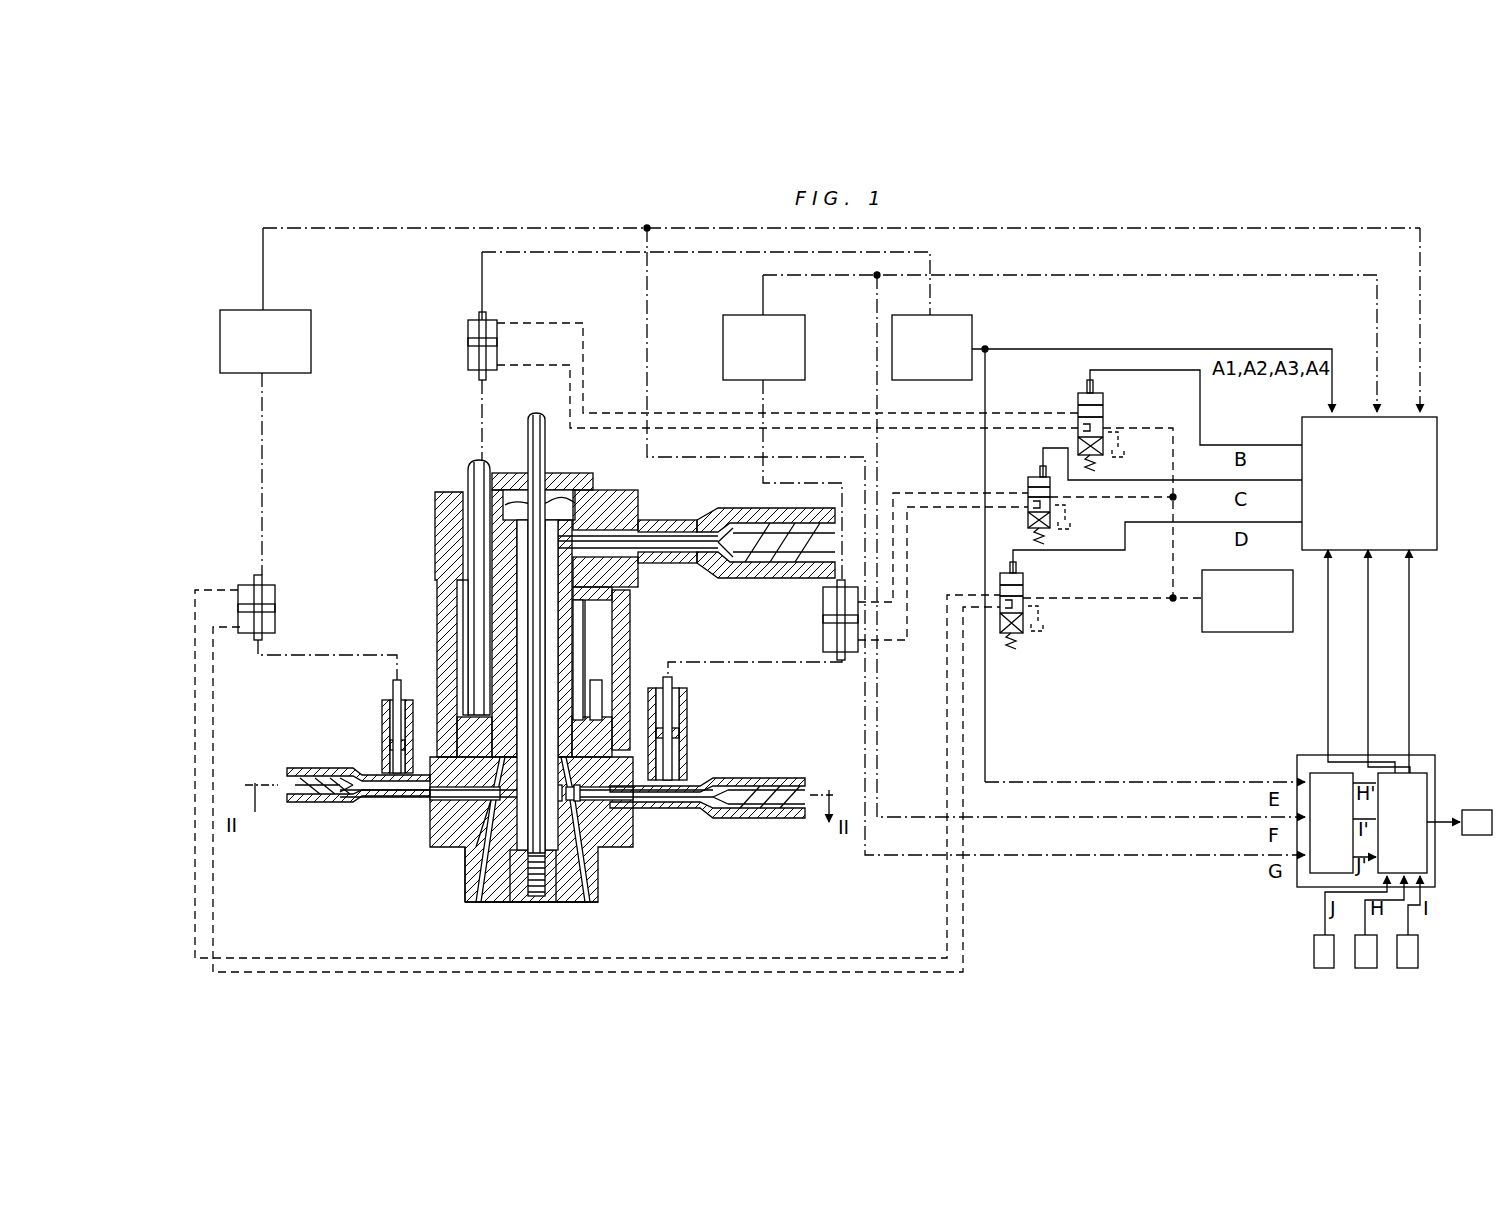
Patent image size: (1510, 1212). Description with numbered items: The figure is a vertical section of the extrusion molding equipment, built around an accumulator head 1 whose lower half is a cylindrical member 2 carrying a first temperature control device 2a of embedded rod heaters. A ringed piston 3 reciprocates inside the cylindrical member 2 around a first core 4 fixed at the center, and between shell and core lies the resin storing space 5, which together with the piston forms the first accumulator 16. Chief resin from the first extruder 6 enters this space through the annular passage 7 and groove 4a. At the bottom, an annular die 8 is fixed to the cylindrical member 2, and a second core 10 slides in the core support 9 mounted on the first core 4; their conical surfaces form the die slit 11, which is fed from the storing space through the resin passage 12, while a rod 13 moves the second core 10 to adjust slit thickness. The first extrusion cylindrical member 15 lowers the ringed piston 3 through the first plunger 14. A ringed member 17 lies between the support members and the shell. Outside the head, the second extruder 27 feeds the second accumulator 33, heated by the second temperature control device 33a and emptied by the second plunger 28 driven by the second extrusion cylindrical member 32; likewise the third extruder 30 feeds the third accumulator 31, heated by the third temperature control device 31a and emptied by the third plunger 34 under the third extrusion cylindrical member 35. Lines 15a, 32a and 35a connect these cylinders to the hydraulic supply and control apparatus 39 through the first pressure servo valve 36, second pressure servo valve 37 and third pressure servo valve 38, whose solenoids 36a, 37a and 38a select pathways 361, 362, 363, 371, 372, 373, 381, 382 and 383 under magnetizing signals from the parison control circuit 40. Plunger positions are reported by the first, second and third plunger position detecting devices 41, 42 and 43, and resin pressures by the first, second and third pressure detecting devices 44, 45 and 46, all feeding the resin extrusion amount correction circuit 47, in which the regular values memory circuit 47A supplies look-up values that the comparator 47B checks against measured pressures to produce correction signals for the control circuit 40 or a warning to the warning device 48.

The accumulator head 1 is at (560, 683).
The cylindrical member 2 is at (630, 646).
The first temperature control device 2a is at (586, 668).
The ringed piston 3 is at (594, 722).
The first core 4 is at (565, 600).
The groove 4a is at (603, 530).
The resin storing space 5 is at (466, 735).
The first extruder 6 is at (718, 510).
The annular passage 7 is at (584, 623).
The annular die 8 is at (598, 892).
The core support 9 is at (588, 845).
The second core 10 is at (586, 904).
The die slit 11 is at (472, 904).
The resin passage 12 is at (472, 842).
The rod 13 is at (546, 462).
The first plunger 14 is at (466, 512).
The first extrusion cylindrical member 15 is at (463, 338).
The lines 15a is at (570, 368).
The first accumulator 16 is at (470, 613).
The ringed member 17 is at (460, 812).
The second extruder 27 is at (295, 768).
The second plunger 28 is at (393, 690).
The third extruder 30 is at (792, 780).
The third accumulator 31 is at (689, 720).
The third temperature control device 31a is at (688, 745).
The second extrusion cylindrical member 32 is at (278, 613).
The lines 32a is at (213, 815).
The second accumulator 33 is at (381, 712).
The second temperature control device 33a is at (388, 745).
The third plunger 34 is at (675, 682).
The third extrusion cylindrical member 35 is at (820, 608).
The lines 35a is at (895, 585).
The first pressure servo valve 36 is at (1089, 421).
The first solenoid 36a is at (1093, 390).
The pathway 361 is at (1076, 397).
The pathway 362 is at (1076, 412).
The pathway 363 is at (1103, 455).
The second pressure servo valve 37 is at (1022, 614).
The second solenoid 37a is at (1018, 579).
The pathway 371 is at (999, 586).
The pathway 372 is at (1025, 609).
The pathway 373 is at (1023, 632).
The third pressure servo valve 38 is at (1002, 489).
The third solenoid 38a is at (1040, 470).
The pathway 381 is at (1026, 486).
The pathway 382 is at (1026, 505).
The pathway 383 is at (1028, 522).
The hydraulic supply and control apparatus 39 is at (1255, 632).
The parison control circuit 40 is at (1437, 488).
The first plunger position detecting device 41 is at (972, 332).
The second plunger position detecting device 42 is at (311, 332).
The third plunger position detecting device 43 is at (805, 354).
The first pressure detecting device 44 is at (1366, 968).
The second pressure detecting device 45 is at (1314, 960).
The third pressure detecting device 46 is at (1418, 960).
The resin extrusion amount correction circuit 47 is at (1425, 755).
The regular values memory circuit 47A is at (1312, 773).
The comparator 47B is at (1427, 787).
The warning device 48 is at (1477, 835).